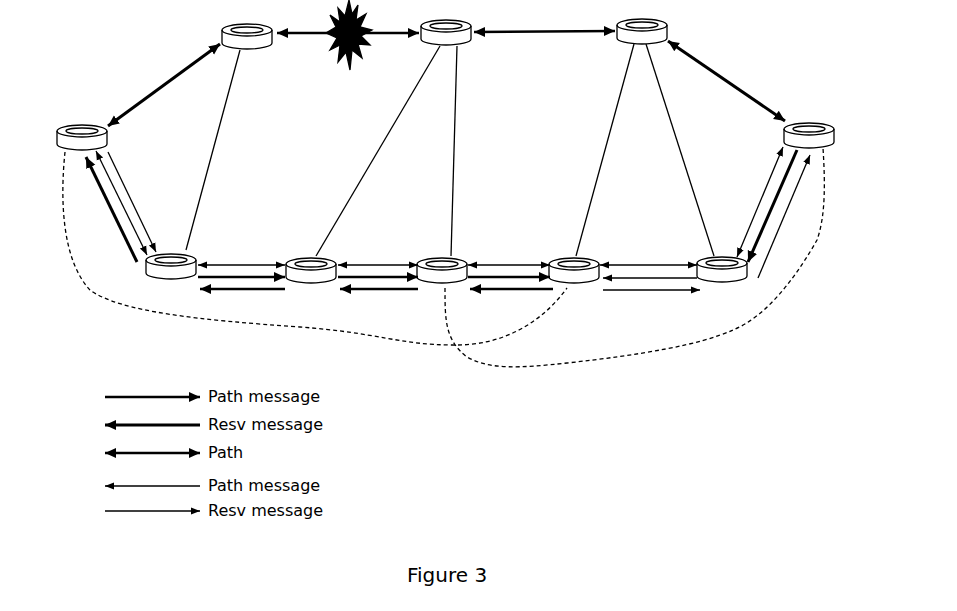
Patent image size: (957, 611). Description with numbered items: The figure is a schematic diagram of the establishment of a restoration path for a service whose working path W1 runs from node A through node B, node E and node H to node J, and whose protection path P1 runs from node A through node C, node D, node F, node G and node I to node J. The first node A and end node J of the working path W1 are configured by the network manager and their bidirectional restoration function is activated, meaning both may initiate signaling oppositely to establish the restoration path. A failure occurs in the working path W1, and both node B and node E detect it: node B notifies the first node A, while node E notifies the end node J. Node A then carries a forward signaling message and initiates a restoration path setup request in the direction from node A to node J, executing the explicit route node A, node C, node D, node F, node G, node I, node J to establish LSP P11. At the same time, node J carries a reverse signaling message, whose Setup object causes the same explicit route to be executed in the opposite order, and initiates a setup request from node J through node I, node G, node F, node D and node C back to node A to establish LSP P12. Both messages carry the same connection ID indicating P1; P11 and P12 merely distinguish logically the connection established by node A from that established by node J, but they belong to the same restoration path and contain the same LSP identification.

The node A is at (72, 137).
The node B is at (247, 47).
The node C is at (171, 276).
The node D is at (311, 281).
The node E is at (446, 43).
The node F is at (442, 281).
The node G is at (574, 281).
The node H is at (642, 41).
The node I is at (722, 280).
The node J is at (809, 145).
The working path W1 is at (164, 85).
The protection path P1 is at (121, 206).
The LSP P11 is at (315, 248).
The LSP P12 is at (634, 257).